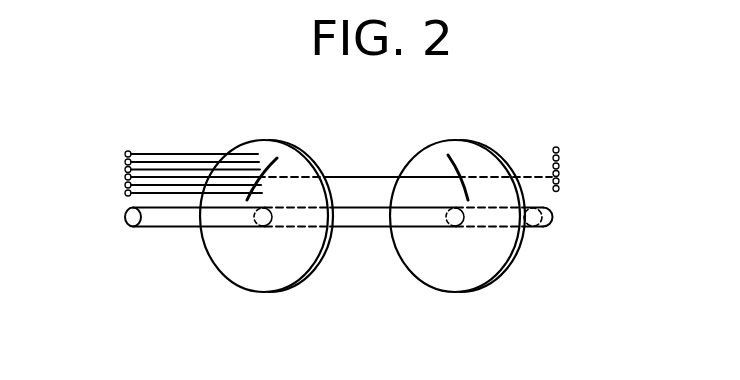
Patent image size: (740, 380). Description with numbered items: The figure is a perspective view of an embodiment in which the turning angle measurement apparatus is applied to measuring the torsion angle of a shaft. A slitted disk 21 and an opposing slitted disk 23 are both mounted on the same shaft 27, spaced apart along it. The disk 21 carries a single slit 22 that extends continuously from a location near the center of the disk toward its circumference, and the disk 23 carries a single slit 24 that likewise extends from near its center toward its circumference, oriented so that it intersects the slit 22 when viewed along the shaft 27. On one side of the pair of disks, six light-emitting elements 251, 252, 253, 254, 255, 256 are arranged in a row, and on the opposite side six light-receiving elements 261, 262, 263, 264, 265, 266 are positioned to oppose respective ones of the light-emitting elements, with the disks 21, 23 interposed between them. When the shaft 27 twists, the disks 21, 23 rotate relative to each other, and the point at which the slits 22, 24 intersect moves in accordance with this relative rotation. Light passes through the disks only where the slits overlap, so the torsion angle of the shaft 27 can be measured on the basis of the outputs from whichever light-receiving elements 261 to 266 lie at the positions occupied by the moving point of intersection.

The slitted disk 21 is at (293, 263).
The slit 22 is at (277, 158).
The slitted disk 23 is at (480, 267).
The slit 24 is at (448, 155).
The shaft 27 is at (158, 222).
The light-emitting element 251 is at (125, 193).
The light-emitting element 252 is at (125, 185).
The light-emitting element 253 is at (125, 177).
The light-emitting element 254 is at (125, 170).
The light-emitting element 255 is at (125, 162).
The light-emitting element 256 is at (125, 154).
The light-receiving element 261 is at (559, 188).
The light-receiving element 262 is at (559, 181).
The light-receiving element 263 is at (559, 174).
The light-receiving element 264 is at (559, 166).
The light-receiving element 265 is at (559, 158).
The light-receiving element 266 is at (559, 150).